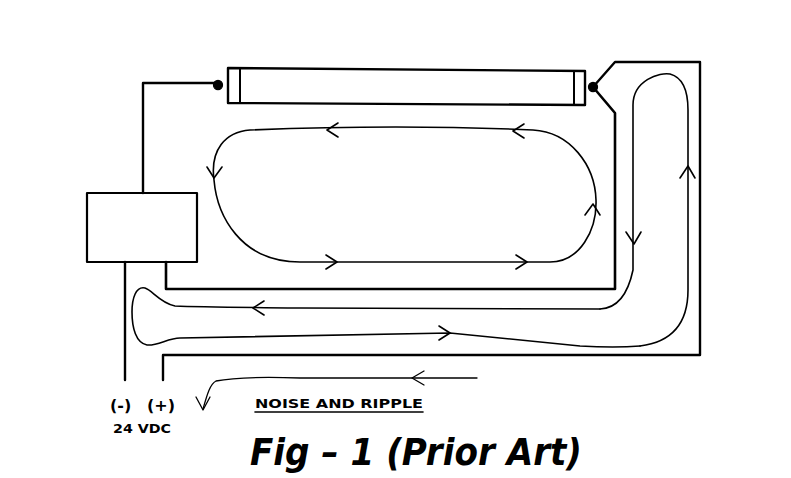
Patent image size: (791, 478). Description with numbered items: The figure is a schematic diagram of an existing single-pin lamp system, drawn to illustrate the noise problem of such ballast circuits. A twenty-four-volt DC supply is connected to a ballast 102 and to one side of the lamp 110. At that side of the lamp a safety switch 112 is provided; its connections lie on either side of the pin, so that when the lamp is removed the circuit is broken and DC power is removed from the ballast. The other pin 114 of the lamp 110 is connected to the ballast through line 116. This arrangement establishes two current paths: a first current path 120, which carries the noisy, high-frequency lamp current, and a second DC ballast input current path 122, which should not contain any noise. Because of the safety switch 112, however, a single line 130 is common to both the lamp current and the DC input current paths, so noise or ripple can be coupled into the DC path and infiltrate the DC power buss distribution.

The ballast 102 is at (142, 227).
The lamp 110 is at (406, 86).
The safety switch 112 is at (591, 82).
The pin 114 is at (216, 80).
The line 116 is at (143, 110).
The first current path 120 is at (403, 196).
The second DC ballast input current path 122 is at (413, 210).
The single line 130 is at (390, 188).